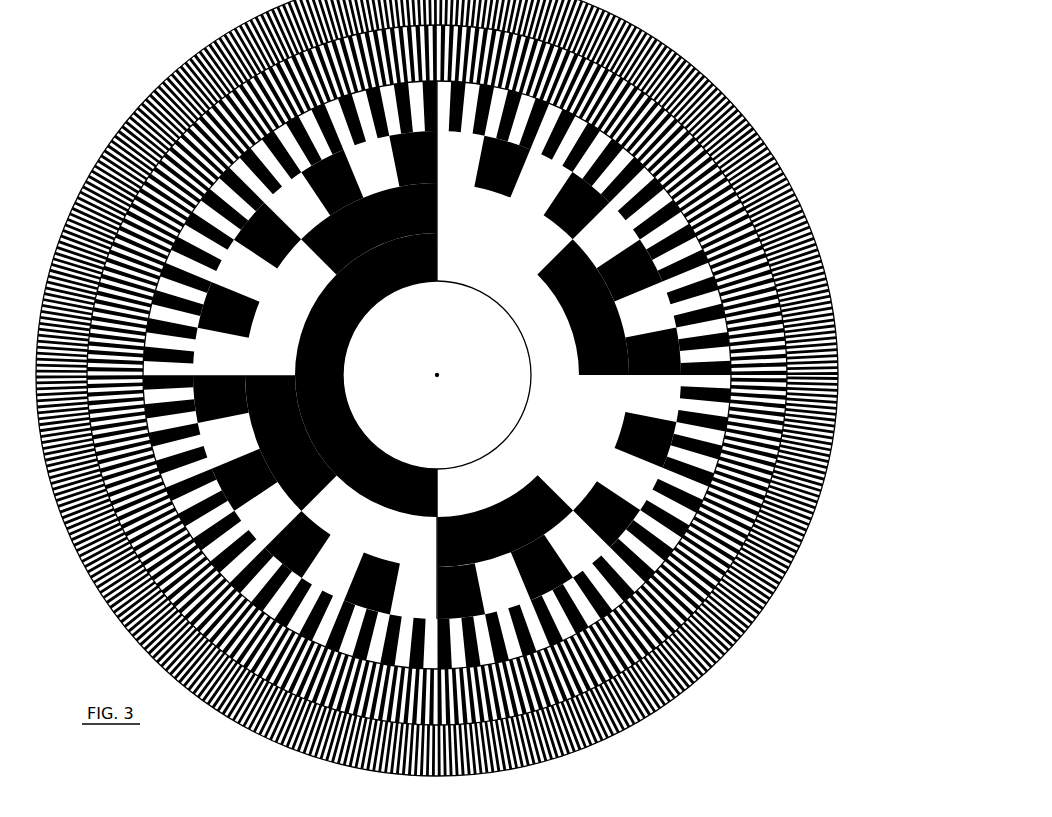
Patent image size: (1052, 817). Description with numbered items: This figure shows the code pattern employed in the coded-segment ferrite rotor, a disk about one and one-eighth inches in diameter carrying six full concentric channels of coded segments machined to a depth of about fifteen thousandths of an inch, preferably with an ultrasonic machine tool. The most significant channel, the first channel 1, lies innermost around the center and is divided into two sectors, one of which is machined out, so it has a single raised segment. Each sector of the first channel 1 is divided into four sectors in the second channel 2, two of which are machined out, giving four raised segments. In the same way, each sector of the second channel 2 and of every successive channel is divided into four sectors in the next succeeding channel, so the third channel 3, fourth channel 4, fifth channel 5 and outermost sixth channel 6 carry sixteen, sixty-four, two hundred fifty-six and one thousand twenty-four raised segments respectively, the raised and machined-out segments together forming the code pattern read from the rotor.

The first channel 1 is at (437, 388).
The second channel 2 is at (582, 378).
The third channel 3 is at (547, 213).
The fourth channel 4 is at (550, 113).
The fifth channel 5 is at (437, 78).
The sixth channel 6 is at (683, 60).